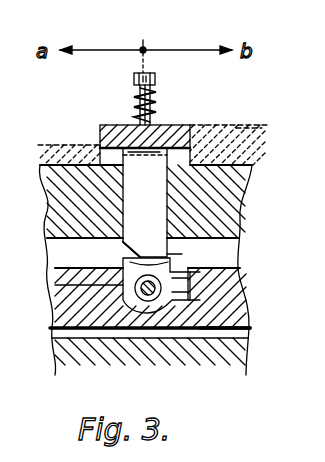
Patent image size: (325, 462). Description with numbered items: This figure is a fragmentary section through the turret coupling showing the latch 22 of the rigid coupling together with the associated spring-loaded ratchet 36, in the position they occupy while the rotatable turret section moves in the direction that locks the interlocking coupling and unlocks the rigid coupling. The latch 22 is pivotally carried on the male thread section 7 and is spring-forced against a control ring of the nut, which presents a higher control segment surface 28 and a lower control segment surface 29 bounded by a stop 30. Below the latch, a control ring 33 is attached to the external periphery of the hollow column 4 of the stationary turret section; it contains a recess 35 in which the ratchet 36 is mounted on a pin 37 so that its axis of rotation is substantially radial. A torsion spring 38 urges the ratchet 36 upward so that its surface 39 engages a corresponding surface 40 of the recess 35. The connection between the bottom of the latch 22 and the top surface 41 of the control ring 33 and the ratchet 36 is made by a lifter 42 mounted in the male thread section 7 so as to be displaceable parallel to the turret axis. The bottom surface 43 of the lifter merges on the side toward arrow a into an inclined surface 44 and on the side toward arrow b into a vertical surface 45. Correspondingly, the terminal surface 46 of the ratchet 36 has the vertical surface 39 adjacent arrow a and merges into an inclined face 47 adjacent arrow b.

The latch 22 is at (167, 132).
The lifter 42 is at (139, 160).
The stop 30 is at (198, 127).
The control segment surface 28 is at (240, 127).
The control segment surface 29 is at (63, 143).
The inclined surface 44 is at (130, 227).
The bottom surface of the lifter 43 is at (152, 258).
The terminal surface of the ratchet 46 is at (122, 258).
The vertical surface 45 is at (167, 254).
The top surface of the control ring 41 is at (50, 256).
The surface of the recess 40 is at (57, 284).
The surface of the ratchet 39 is at (57, 300).
The control ring 33 is at (52, 328).
The recess 35 is at (246, 328).
The inclined face 47 is at (238, 282).
The torsion spring 38 is at (238, 287).
The pin 37 is at (140, 342).
The ratchet 36 is at (168, 343).
The hollow column 4 is at (158, 345).
The male thread section 7 is at (232, 197).